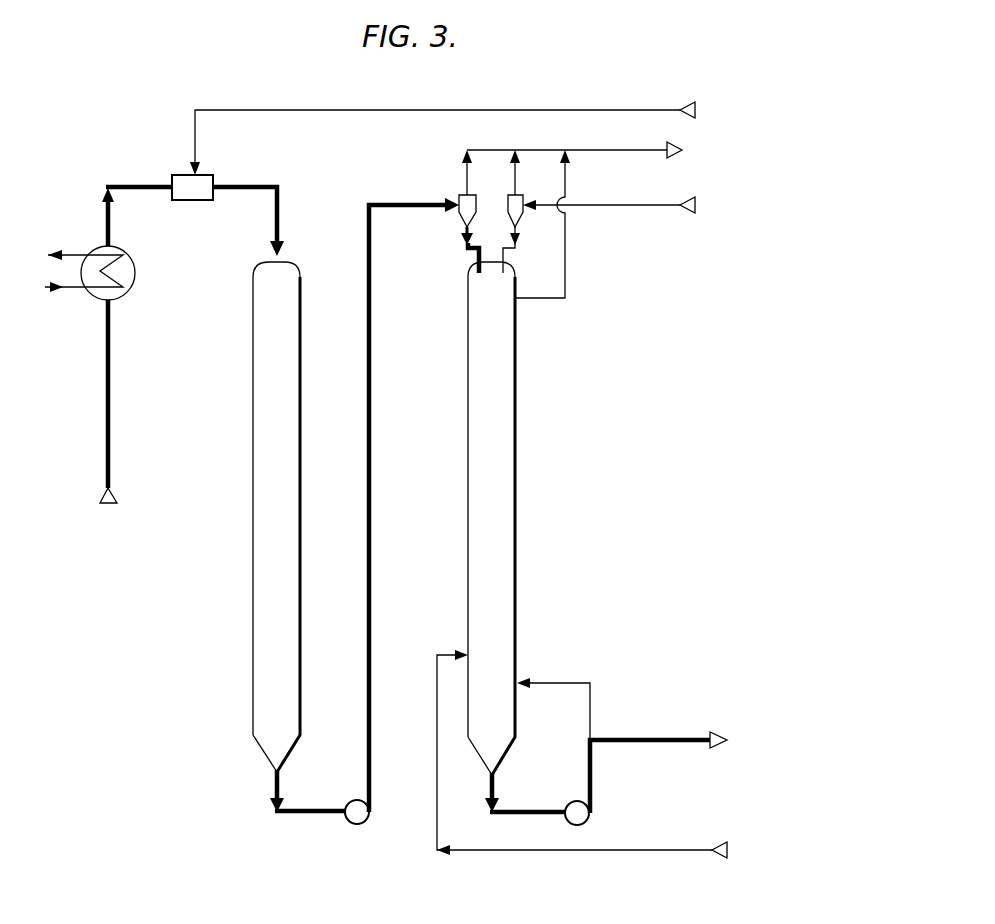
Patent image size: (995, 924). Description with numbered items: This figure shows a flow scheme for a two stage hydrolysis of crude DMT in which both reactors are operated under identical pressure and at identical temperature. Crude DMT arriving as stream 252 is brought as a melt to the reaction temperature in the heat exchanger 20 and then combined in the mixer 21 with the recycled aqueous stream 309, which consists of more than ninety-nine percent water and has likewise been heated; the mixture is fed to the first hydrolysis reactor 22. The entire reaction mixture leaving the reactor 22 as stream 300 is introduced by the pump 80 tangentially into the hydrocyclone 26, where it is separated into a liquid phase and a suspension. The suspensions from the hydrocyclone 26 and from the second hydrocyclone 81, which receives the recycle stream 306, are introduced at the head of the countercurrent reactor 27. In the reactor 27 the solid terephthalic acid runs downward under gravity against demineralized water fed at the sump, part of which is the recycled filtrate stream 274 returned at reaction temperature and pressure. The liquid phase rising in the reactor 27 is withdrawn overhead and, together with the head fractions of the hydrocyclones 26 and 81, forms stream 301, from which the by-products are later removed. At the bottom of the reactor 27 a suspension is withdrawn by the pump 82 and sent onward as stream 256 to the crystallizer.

The heat exchanger 20 is at (126, 291).
The mixer 21 is at (181, 174).
The hydrolysis reactor 22 is at (252, 456).
The hydrocyclone 26 is at (462, 194).
The countercurrent hydrolysis reactor 27 is at (516, 456).
The pump 80 is at (353, 825).
The hydrocyclone 81 is at (521, 194).
The pump 82 is at (588, 822).
The crude DMT stream 252 is at (123, 383).
The suspension stream 256 is at (676, 745).
The recycled filtrate stream 274 is at (658, 760).
The reaction mixture stream 300 is at (413, 505).
The combined head fraction stream 301 is at (629, 205).
The recycle stream 306 is at (660, 201).
The recycled water stream 309 is at (493, 121).